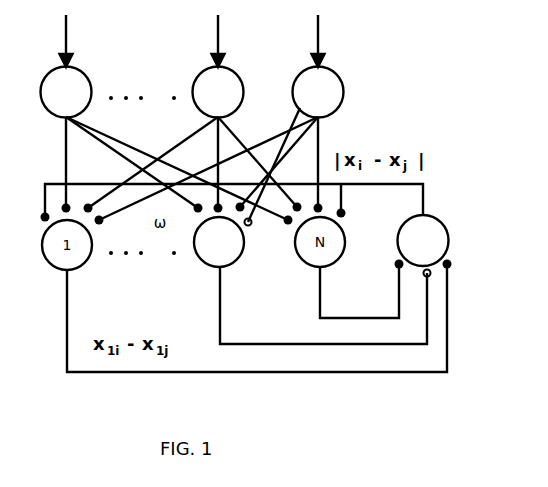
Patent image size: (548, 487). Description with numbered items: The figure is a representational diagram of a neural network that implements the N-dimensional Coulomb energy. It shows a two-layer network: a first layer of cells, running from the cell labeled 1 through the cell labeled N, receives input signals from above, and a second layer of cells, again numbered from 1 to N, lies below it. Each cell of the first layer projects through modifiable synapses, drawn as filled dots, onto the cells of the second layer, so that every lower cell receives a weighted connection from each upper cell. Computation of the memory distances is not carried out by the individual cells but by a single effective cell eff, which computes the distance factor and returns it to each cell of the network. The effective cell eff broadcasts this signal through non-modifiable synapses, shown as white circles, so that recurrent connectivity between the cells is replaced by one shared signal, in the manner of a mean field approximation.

The input neuron 1 is at (165, 144).
The input neuron N is at (221, 145).
The efference neuron eff is at (423, 240).